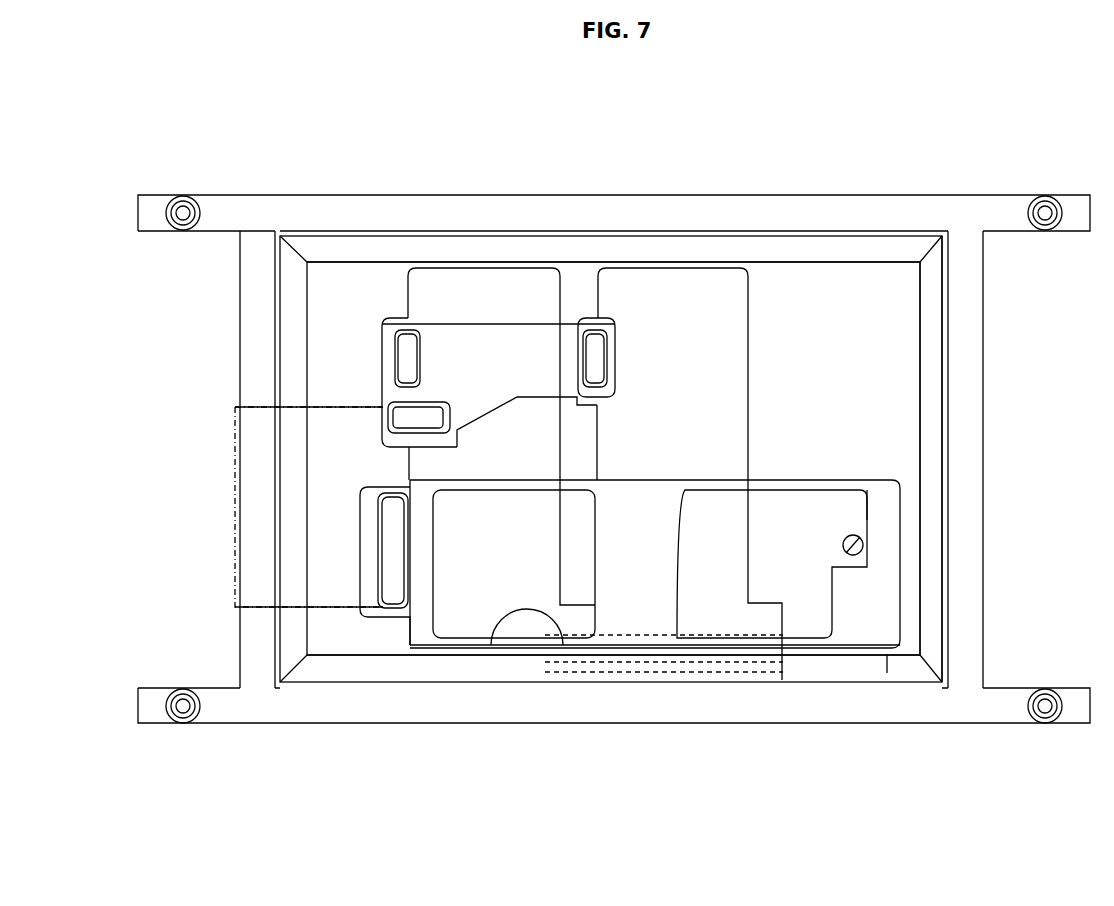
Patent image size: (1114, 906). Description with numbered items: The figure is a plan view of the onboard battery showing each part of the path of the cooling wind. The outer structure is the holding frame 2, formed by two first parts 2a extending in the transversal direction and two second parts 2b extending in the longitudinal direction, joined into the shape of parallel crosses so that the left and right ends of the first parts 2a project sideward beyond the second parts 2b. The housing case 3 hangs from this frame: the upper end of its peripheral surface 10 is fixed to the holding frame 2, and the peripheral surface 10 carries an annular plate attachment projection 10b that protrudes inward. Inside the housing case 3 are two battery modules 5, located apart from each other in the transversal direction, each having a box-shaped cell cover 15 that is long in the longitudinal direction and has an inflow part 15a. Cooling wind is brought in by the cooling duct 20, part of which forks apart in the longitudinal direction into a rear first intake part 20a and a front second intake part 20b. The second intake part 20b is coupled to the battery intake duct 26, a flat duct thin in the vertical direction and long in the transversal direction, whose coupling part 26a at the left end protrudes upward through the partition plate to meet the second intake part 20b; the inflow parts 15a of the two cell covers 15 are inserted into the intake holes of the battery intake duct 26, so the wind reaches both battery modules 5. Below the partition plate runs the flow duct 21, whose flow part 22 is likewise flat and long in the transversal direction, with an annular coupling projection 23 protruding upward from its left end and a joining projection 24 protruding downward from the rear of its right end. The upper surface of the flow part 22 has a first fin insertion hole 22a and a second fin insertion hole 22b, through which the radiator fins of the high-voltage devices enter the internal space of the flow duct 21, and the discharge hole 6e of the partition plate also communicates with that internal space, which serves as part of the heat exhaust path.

The holding frame 2 is at (957, 195).
The first part 2a is at (1068, 195).
The second part 2b is at (250, 258).
The housing case 3 is at (948, 352).
The battery module 5 is at (462, 268).
The discharge hole 6e is at (853, 556).
The peripheral surface 10 is at (955, 475).
The annular plate attachment projection 10b is at (932, 400).
The cell cover 15 is at (538, 268).
The inflow part 15a is at (438, 317).
The cooling duct 20 is at (235, 527).
The first intake part 20a is at (370, 608).
The second intake part 20b is at (357, 407).
The flow duct 21 is at (900, 573).
The flow part 22 is at (890, 603).
The first fin insertion hole 22a is at (491, 645).
The second fin insertion hole 22b is at (860, 503).
The annular coupling projection 23 is at (393, 620).
The joining projection 24 is at (895, 672).
The battery intake duct 26 is at (493, 333).
The coupling part 26a is at (383, 438).